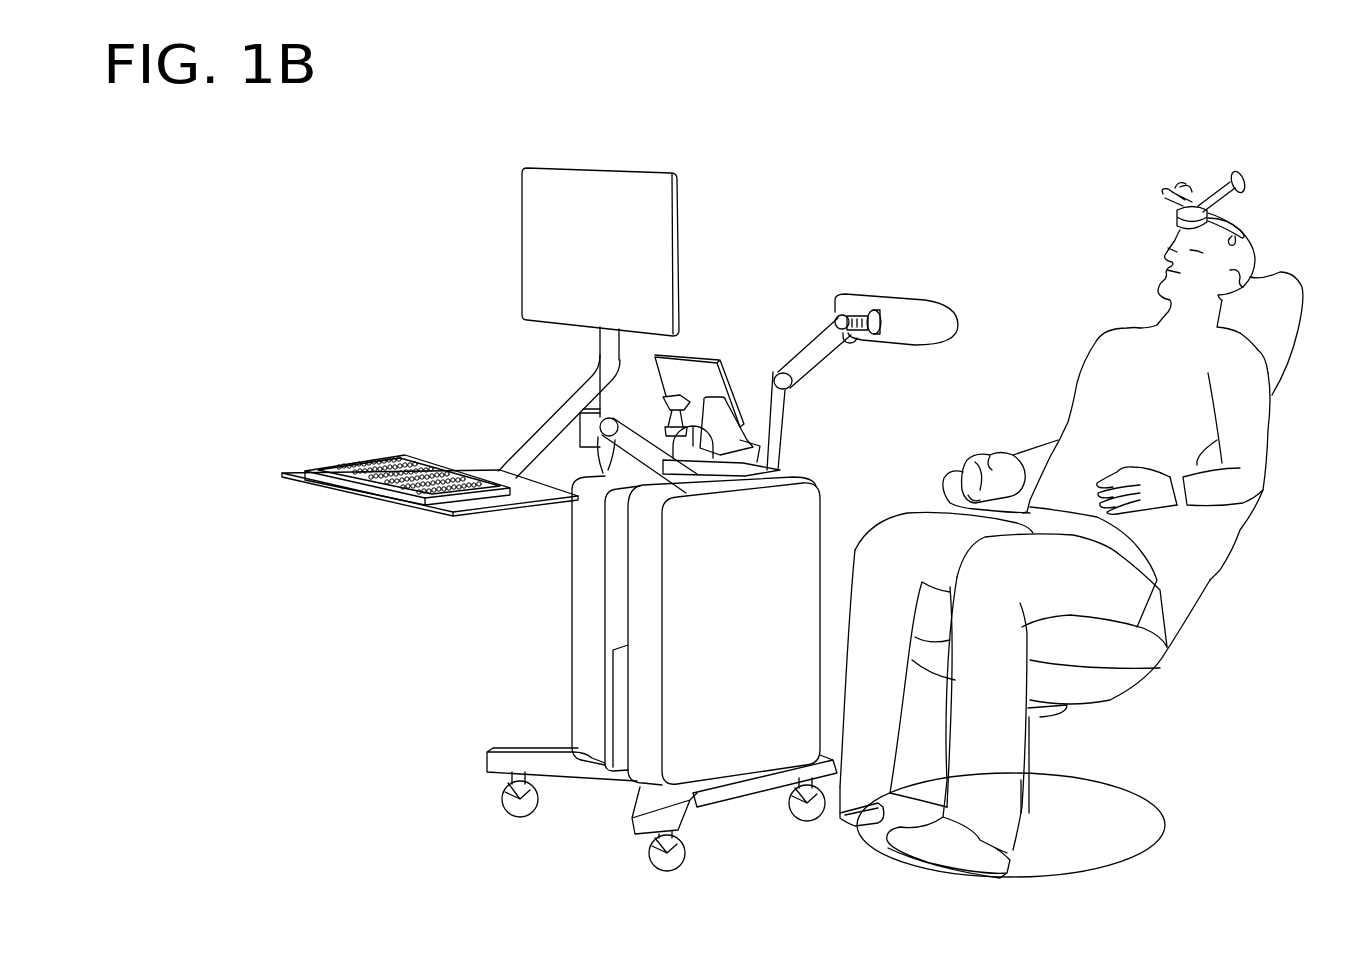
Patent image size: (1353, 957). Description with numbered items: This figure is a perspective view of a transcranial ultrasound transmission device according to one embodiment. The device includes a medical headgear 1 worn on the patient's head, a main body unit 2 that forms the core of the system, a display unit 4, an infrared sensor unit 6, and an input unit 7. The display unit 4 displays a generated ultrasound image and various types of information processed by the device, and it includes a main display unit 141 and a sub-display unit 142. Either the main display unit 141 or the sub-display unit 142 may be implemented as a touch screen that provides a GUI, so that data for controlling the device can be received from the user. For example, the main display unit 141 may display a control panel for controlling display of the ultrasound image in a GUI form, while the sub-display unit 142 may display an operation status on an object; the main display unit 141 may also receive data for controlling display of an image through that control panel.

The medical headgear 1 is at (1215, 178).
The main body unit 2 is at (728, 762).
The display unit 4 is at (755, 100).
The infrared sensor unit 6 is at (933, 312).
The input unit 7 is at (350, 472).
The main display unit 141 is at (608, 178).
The sub-display unit 142 is at (707, 362).